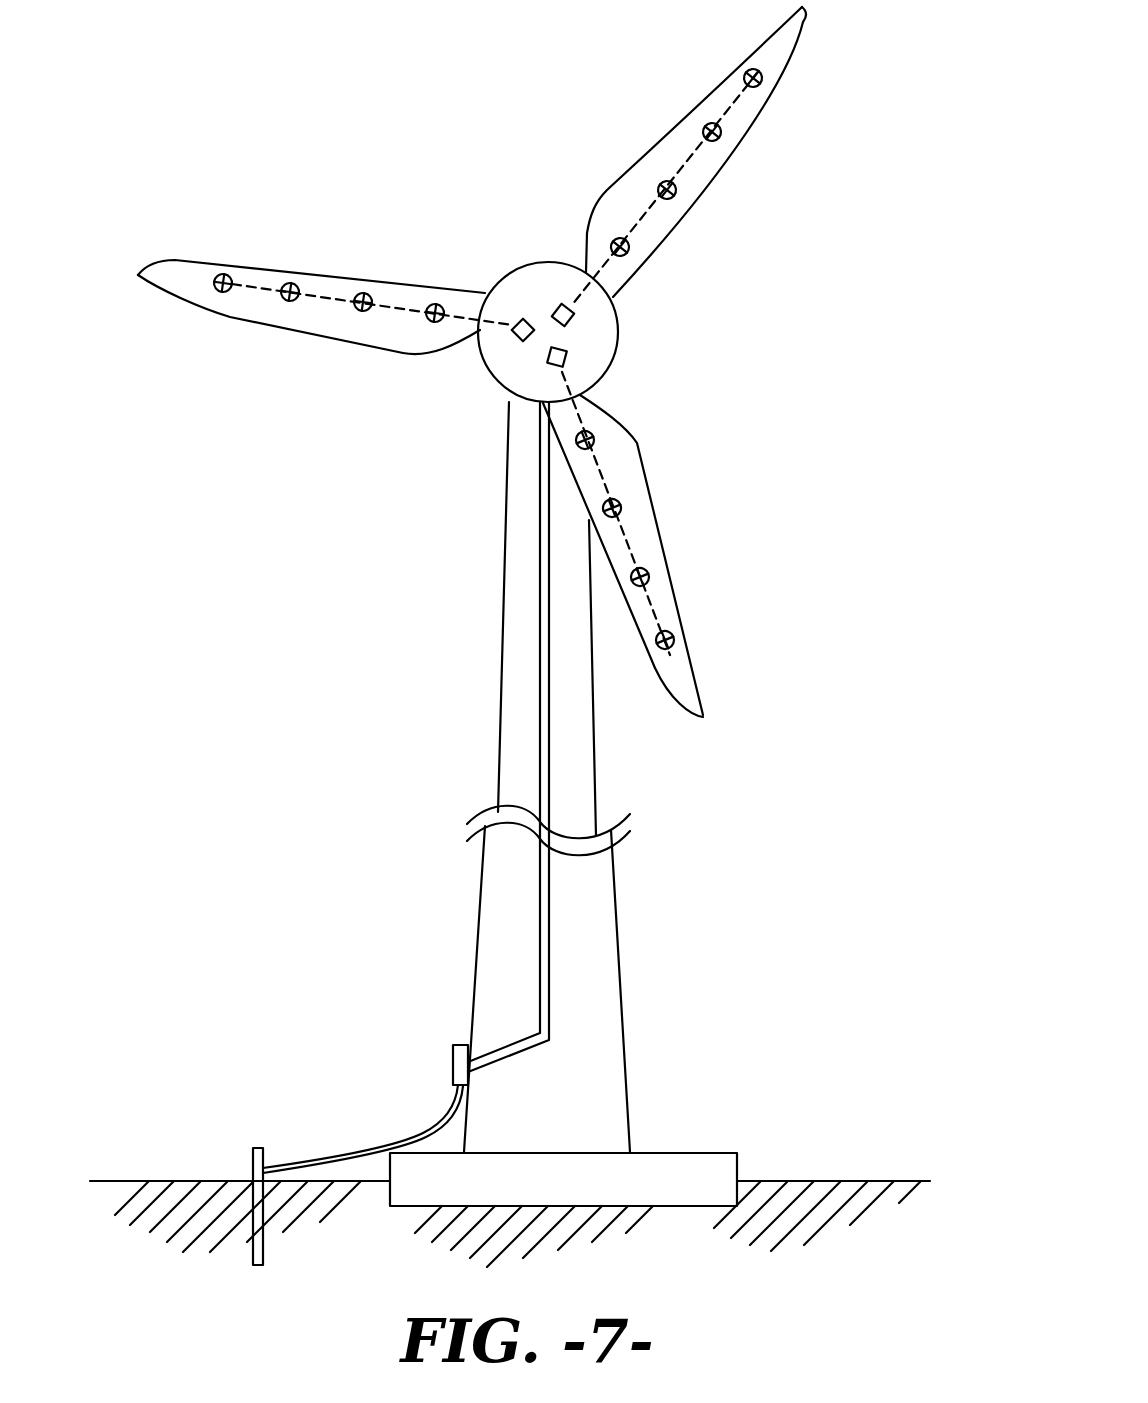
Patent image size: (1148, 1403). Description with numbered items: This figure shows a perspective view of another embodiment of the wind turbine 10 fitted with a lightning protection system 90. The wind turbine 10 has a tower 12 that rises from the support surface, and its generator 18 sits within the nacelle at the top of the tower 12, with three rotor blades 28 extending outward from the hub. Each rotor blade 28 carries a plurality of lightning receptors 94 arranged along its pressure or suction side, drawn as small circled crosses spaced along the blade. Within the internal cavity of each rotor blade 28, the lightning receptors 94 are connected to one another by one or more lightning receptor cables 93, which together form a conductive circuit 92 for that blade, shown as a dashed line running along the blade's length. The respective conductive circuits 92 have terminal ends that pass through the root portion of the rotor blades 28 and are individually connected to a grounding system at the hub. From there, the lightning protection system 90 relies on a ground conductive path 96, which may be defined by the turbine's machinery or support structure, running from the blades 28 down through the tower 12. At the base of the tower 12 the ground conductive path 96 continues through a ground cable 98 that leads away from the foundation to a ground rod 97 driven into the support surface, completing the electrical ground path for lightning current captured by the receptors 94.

The lightning protection system 90 is at (297, 100).
The wind turbine 10 is at (507, 228).
The tower 12 is at (597, 963).
The generator 18 is at (498, 355).
The rotor blade 28 is at (250, 258).
The conductive circuit 92 is at (332, 293).
The lightning receptor cable 93 is at (400, 307).
The lightning receptor 94 is at (368, 308).
The ground conductive path 96 is at (537, 679).
The ground rod 97 is at (250, 1160).
The ground cable 98 is at (433, 1125).